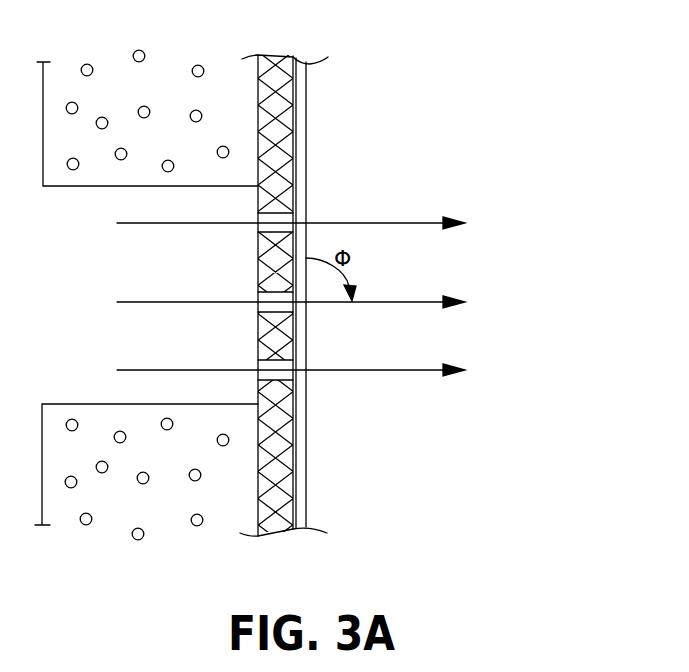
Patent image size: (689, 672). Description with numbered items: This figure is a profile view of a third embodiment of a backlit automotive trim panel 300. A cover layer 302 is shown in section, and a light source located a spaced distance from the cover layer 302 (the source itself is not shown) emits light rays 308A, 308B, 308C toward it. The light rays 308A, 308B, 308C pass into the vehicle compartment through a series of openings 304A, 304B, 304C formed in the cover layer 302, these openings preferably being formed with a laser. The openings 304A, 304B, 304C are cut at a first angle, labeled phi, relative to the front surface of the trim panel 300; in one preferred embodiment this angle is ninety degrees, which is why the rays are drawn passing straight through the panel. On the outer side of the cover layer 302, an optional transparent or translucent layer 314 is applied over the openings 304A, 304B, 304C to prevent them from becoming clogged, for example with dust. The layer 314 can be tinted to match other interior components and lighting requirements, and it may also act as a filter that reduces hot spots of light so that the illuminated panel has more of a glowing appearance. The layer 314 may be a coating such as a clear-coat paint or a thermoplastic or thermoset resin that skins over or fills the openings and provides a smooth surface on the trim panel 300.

The trim panel 300 is at (470, 88).
The cover layer 302 is at (258, 117).
The opening 304A is at (293, 218).
The opening 304B is at (293, 307).
The opening 304C is at (306, 373).
The light ray 308A is at (418, 224).
The light ray 308B is at (418, 303).
The light ray 308C is at (418, 371).
The transparent or translucent layer 314 is at (306, 457).